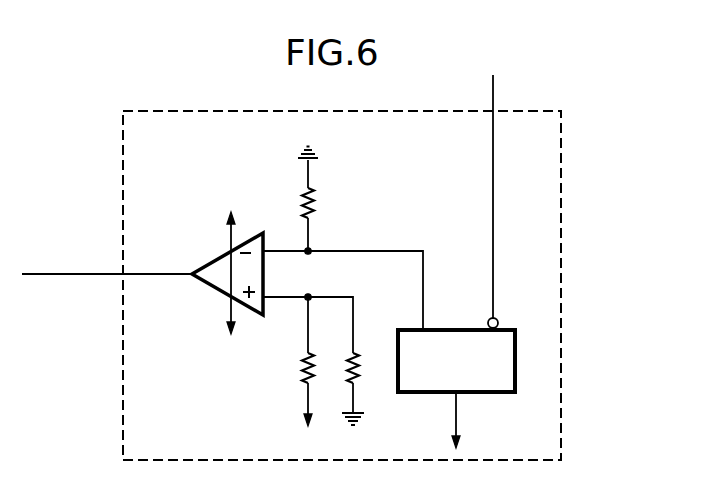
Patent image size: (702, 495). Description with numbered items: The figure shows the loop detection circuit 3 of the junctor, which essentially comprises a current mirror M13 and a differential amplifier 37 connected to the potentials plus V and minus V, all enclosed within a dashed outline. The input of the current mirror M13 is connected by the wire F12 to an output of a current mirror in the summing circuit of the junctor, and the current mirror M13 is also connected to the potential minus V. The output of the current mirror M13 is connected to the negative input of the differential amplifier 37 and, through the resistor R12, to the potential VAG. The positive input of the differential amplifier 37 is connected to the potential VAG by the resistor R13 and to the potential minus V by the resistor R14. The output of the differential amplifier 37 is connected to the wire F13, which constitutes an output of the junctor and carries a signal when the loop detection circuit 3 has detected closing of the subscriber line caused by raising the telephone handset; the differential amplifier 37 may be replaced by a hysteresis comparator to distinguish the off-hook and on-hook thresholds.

The loop detection circuit 3 is at (157, 140).
The differential amplifier 37 is at (226, 268).
The wire F12 is at (494, 92).
The wire F13 is at (88, 272).
The resistor R12 is at (314, 205).
The resistor R13 is at (356, 370).
The resistor R14 is at (303, 366).
The current mirror M13 is at (500, 370).